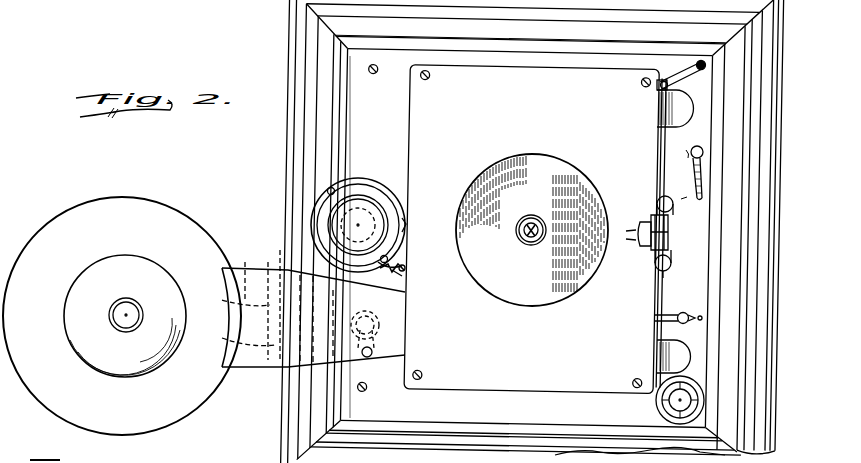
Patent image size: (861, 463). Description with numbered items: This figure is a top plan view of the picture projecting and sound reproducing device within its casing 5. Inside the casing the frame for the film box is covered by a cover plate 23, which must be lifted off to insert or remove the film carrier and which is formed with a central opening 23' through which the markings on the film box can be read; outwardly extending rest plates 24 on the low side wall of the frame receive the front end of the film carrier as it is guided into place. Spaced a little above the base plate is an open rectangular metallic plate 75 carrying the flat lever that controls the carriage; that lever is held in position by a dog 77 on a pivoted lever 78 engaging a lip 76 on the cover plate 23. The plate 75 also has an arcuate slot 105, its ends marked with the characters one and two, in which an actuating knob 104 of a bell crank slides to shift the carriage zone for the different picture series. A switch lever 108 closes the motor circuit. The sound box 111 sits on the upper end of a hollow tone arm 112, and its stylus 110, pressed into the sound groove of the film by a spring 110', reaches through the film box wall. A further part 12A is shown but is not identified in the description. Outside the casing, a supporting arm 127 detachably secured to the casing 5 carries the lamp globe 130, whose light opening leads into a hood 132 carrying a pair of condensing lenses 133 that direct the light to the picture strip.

The casing 5 is at (290, 47).
The cover plate 23 is at (535, 229).
The central opening 23' is at (532, 212).
The rest plates 24 is at (680, 104).
The open rectangular shaped metallic plate 75 is at (369, 237).
The lip 76 is at (640, 250).
The dog 77 is at (640, 230).
The lever 78 is at (648, 206).
The actuating knob 104 is at (698, 146).
The arcuate slot 105 is at (694, 181).
The switch lever 108 is at (672, 74).
The stylus 110 is at (424, 207).
The spring 110' is at (427, 287).
The sound box 111 is at (362, 186).
The hollow tone arm 112 is at (402, 266).
The push button 12A is at (694, 316).
The supporting arm 127 is at (245, 262).
The sectional metallic globe 130 is at (166, 212).
The hood 132 is at (290, 380).
The condensing lenses 133 is at (270, 262).